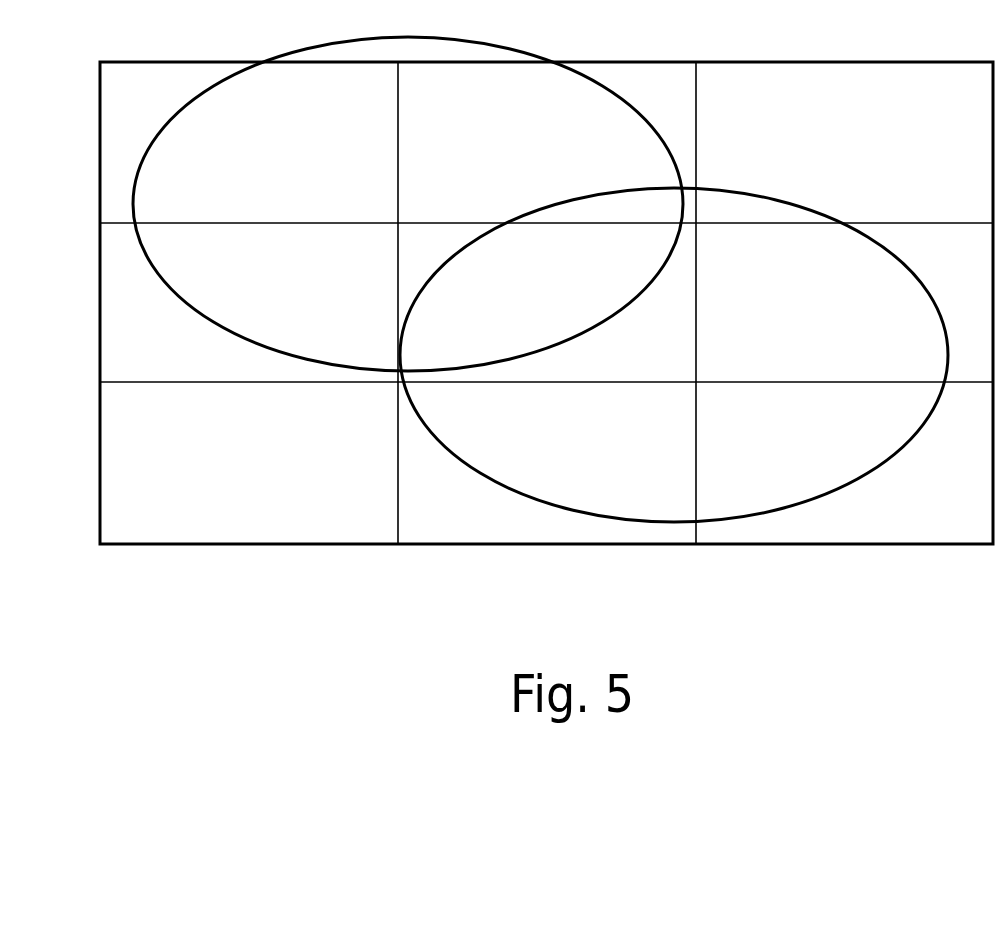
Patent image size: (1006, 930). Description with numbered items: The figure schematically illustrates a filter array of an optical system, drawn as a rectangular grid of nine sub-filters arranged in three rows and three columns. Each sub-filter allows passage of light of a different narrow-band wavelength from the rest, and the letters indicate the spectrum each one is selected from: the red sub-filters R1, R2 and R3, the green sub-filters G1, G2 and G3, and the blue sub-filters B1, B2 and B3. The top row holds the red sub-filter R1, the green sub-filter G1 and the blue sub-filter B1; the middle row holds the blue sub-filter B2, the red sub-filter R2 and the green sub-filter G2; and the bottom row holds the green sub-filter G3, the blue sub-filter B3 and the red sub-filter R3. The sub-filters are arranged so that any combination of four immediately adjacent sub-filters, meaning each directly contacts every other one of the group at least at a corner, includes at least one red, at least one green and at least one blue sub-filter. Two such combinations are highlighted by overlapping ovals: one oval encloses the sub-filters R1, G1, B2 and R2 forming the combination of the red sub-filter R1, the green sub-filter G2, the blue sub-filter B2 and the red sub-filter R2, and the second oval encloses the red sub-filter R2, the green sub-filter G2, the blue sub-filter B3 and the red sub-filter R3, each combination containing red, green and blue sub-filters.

The red sub-filter R1 is at (249, 142).
The green sub-filter G1 is at (547, 142).
The blue sub-filter B1 is at (844, 142).
The blue sub-filter B2 is at (249, 302).
The red sub-filter R2 is at (547, 302).
The green sub-filter G2 is at (844, 302).
The green sub-filter G3 is at (249, 463).
The blue sub-filter B3 is at (547, 463).
The red sub-filter R3 is at (844, 463).